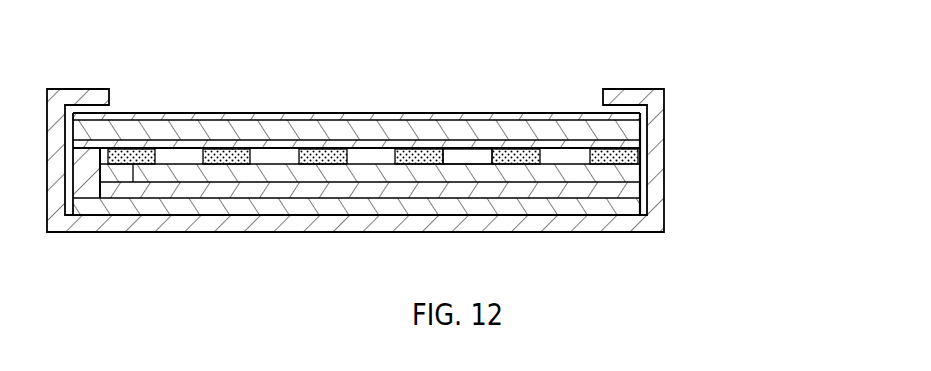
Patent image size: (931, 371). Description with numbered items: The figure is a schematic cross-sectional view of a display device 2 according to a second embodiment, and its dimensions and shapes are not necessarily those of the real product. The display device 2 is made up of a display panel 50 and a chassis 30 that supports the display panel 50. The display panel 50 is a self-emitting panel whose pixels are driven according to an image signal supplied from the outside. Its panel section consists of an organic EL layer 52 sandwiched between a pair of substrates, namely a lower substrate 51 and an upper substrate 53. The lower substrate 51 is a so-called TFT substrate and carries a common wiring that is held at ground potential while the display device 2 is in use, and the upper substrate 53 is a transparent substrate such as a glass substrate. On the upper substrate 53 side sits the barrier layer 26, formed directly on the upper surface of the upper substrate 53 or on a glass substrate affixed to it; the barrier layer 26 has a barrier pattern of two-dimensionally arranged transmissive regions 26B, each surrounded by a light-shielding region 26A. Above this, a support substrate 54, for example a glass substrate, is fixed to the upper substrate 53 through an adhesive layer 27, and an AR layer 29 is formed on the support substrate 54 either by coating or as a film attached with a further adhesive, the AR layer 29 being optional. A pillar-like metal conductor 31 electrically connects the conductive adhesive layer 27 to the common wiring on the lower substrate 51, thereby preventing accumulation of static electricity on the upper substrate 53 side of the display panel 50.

The display device 2 is at (672, 42).
The barrier layer 26 is at (626, 158).
The light-shielding region 26A is at (519, 155).
The transmissive region 26B is at (467, 155).
The adhesive layer 27 is at (623, 142).
The AR layer 29 is at (637, 100).
The chassis 30 is at (369, 222).
The conductor 31 is at (88, 185).
The display panel 50 is at (731, 68).
The lower substrate 51 is at (662, 232).
The organic EL layer 52 is at (620, 205).
The upper substrate 53 is at (625, 187).
The support substrate 54 is at (620, 120).